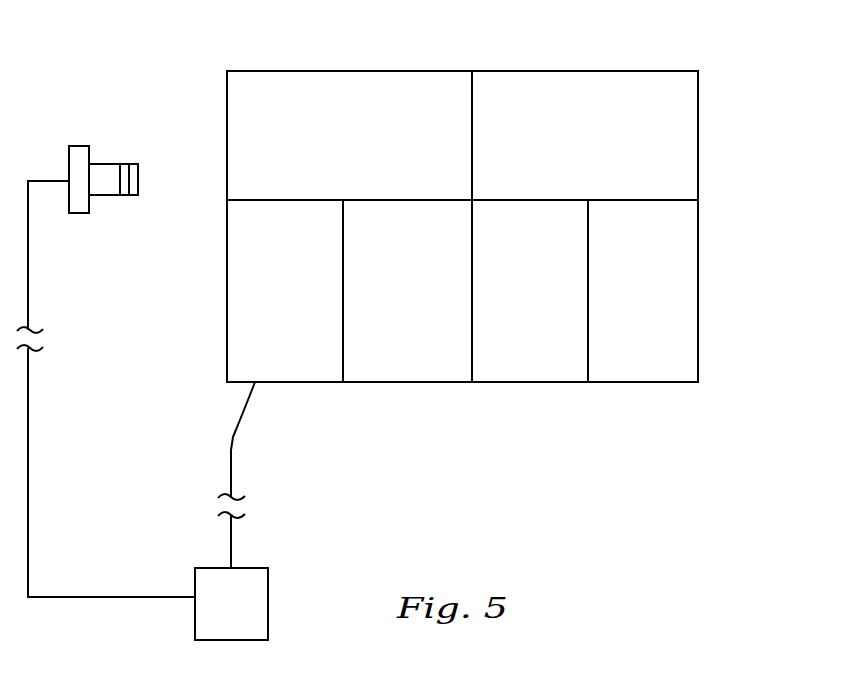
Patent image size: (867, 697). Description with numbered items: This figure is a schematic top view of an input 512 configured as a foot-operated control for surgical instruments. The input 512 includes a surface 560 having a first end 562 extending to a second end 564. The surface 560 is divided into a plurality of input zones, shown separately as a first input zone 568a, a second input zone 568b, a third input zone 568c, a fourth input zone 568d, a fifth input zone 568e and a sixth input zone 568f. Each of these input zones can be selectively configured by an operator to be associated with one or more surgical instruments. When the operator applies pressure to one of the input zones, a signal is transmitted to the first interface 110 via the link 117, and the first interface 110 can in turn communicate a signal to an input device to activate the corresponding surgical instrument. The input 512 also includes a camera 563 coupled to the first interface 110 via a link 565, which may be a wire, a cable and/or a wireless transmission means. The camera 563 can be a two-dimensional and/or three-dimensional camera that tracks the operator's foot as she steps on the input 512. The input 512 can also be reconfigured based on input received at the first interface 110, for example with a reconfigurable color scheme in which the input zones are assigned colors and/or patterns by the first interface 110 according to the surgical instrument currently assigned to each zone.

The input 512 is at (174, 136).
The surface 560 is at (698, 218).
The first end 562 is at (731, 339).
The second end 564 is at (727, 167).
The camera 563 is at (118, 196).
The link 565 is at (28, 303).
The first input zone 568a is at (258, 287).
The second input zone 568b is at (415, 358).
The third input zone 568c is at (535, 358).
The fourth input zone 568d is at (658, 358).
The fifth input zone 568e is at (325, 95).
The sixth input zone 568f is at (574, 93).
The first interface 110 is at (198, 567).
The link 117 is at (231, 450).